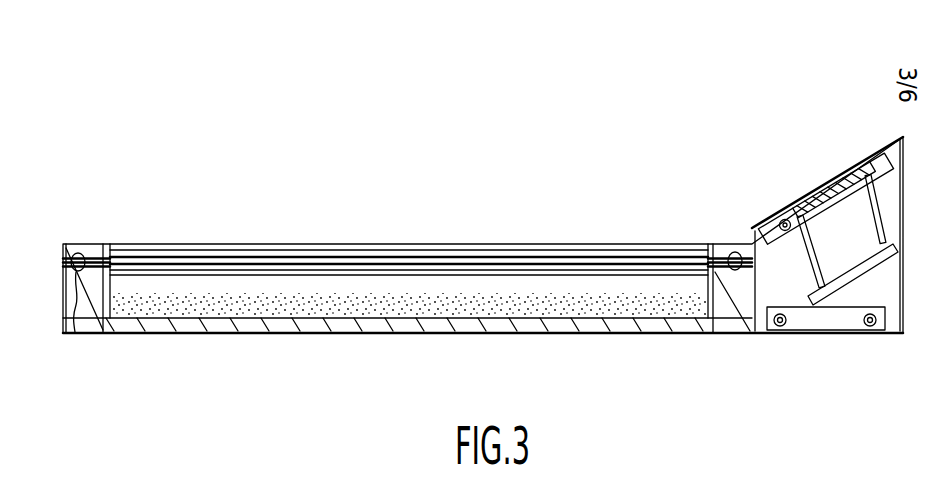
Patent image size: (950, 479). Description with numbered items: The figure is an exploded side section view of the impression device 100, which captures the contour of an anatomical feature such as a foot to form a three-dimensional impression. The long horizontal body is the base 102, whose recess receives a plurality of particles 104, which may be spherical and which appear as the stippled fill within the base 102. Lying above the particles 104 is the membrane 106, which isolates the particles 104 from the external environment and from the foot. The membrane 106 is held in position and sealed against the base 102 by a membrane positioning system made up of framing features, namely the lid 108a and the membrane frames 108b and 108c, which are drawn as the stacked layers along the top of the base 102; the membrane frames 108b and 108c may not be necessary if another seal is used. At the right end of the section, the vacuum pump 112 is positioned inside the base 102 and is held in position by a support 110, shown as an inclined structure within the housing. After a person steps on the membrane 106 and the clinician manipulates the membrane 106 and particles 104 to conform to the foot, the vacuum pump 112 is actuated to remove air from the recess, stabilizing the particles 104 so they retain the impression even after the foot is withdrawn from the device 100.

The impression device 100 is at (104, 126).
The base 102 is at (103, 333).
The particles 104 is at (358, 297).
The membrane 106 is at (73, 334).
The lid 108a is at (80, 257).
The membrane frame 108b is at (68, 261).
The membrane frame 108c is at (68, 265).
The support 110 is at (882, 213).
The vacuum pump 112 is at (827, 180).